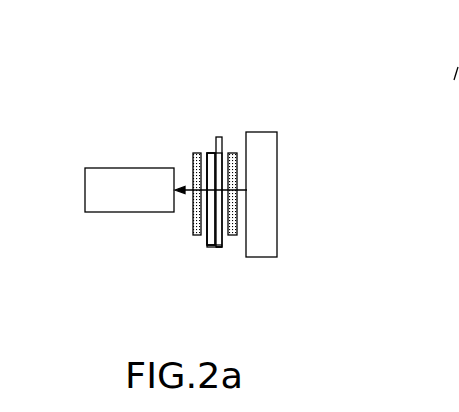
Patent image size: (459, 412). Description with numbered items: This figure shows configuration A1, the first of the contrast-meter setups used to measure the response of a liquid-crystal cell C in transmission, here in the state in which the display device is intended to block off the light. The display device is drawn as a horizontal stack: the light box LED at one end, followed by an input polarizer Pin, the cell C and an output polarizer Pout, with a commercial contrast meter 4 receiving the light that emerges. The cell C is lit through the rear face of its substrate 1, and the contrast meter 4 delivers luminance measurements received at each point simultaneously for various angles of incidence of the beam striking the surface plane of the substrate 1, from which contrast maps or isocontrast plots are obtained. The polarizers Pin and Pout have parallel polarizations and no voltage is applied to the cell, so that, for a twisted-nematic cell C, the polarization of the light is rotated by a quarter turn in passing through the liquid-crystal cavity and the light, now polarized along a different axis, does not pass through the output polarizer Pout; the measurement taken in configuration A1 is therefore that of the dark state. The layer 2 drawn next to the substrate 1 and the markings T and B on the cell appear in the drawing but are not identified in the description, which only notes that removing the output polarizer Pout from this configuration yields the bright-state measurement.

The configuration A1 is at (118, 104).
The contrast meter 4 is at (93, 177).
The output polarizer Pout is at (192, 218).
The transparent layer 2 is at (208, 225).
The liquid-crystal cell C is at (208, 152).
The substrate 1 is at (210, 243).
The thickness layer T is at (218, 137).
The bottom side B is at (215, 247).
The input polarizer Pin is at (230, 153).
The light box LED is at (263, 243).